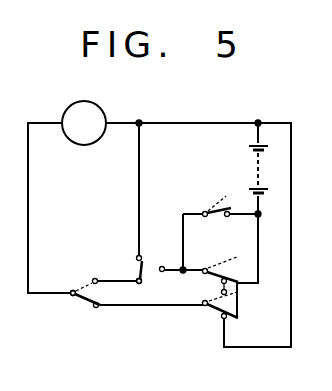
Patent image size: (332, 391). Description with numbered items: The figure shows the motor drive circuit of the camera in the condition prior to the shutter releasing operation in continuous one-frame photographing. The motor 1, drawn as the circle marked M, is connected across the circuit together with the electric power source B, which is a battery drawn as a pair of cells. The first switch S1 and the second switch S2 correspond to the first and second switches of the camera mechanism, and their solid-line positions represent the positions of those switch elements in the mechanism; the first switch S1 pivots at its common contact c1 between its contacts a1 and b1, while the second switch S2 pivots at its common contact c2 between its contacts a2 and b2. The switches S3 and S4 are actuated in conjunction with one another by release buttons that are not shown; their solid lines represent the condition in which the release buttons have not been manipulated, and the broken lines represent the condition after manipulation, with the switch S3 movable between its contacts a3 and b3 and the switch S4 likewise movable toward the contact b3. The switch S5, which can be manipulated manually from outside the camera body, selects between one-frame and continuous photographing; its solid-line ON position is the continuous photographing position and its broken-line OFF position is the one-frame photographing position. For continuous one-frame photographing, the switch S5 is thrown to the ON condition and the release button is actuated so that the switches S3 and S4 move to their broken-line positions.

The motor 1 is at (100, 92).
The electric power source B is at (253, 144).
The first switch S1 is at (72, 290).
The second switch S2 is at (144, 281).
The switch S3 is at (209, 311).
The switch S4 is at (240, 268).
The switch S5 is at (210, 208).
The contact a1 of switch S1 a1 is at (94, 309).
The contact b1 of switch S1 b1 is at (94, 278).
The common contact c1 of switch S1 c1 is at (75, 298).
The contact a2 of switch S2 a2 is at (164, 266).
The contact b2 of switch S2 b2 is at (142, 255).
The common contact c2 of switch S2 c2 is at (137, 278).
The contact a3 of switch S3 a3 is at (227, 318).
The contact b3 of switches S3 and S4 b3 is at (221, 287).